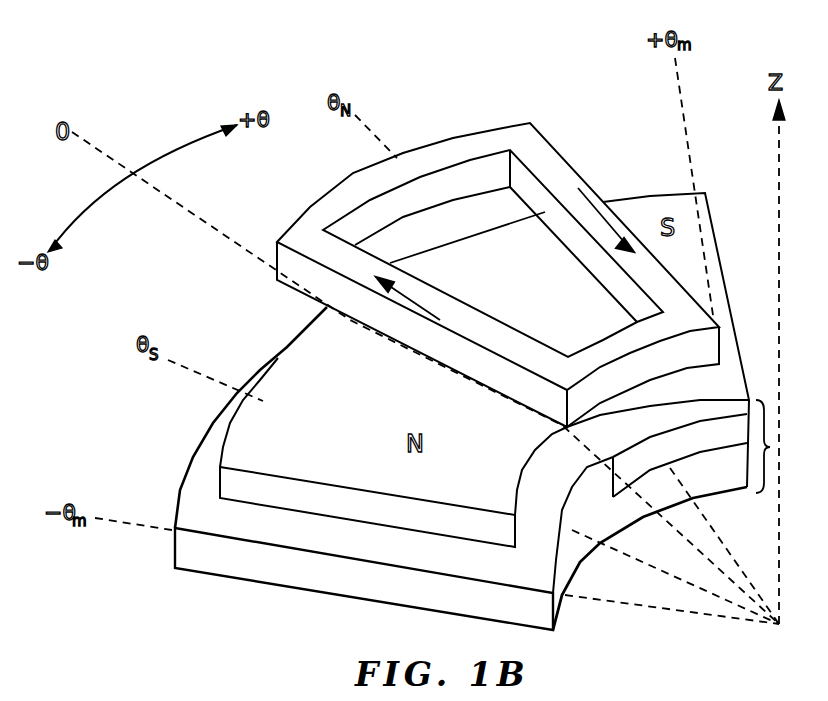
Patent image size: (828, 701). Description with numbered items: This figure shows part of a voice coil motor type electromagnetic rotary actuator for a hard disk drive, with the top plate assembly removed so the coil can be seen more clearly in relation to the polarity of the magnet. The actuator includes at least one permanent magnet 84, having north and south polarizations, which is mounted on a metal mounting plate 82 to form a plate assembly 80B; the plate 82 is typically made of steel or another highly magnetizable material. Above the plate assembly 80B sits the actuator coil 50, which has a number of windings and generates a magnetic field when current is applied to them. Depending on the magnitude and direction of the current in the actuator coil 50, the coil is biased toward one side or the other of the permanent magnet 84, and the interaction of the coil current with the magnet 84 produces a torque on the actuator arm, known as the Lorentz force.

The actuator coil 50 is at (550, 157).
The mounting plate 82 is at (223, 572).
The permanent magnet 84 is at (713, 253).
The plate assembly 80B is at (787, 446).